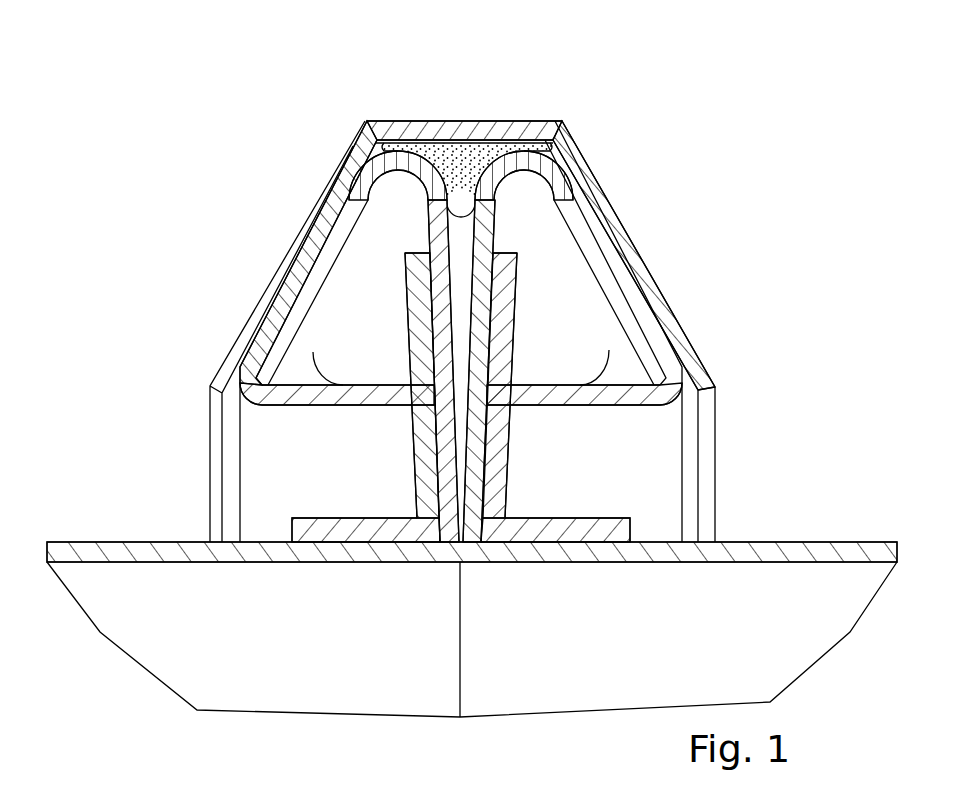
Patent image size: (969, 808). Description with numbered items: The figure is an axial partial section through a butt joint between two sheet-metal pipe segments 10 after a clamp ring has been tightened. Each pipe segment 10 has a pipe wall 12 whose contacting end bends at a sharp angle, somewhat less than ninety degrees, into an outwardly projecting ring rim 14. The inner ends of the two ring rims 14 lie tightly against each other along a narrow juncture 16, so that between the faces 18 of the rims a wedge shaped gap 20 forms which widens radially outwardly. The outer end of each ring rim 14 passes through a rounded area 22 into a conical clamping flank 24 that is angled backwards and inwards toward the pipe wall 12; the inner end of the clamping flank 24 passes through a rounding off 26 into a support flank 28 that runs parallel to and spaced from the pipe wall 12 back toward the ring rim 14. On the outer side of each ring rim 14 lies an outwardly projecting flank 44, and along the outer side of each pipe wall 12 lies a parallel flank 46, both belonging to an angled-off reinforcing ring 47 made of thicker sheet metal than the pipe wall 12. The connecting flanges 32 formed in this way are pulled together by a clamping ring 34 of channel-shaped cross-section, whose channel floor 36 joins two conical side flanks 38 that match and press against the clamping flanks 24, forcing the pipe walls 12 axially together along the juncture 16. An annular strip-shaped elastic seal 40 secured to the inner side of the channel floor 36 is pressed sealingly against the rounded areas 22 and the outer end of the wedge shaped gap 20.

The pipe segment 10 is at (133, 530).
The pipe wall 12 is at (82, 552).
The ring rim 14 is at (440, 473).
The juncture 16 is at (460, 635).
The face 18 is at (443, 267).
The wedge shaped gap 20 is at (467, 240).
The rounded area 22 is at (507, 157).
The clamping flank 24 is at (282, 328).
The rounding off 26 is at (240, 386).
The support flank 28 is at (313, 352).
The connecting flange 32 is at (300, 234).
The clamping ring 34 is at (608, 169).
The channel floor 36 is at (517, 157).
The side flank 38 is at (280, 278).
The elastic seal 40 is at (373, 142).
The outwardly projecting flank 44 is at (407, 293).
The flank running parallel to the pipe wall 46 is at (347, 542).
The reinforcing ring 47 is at (409, 432).